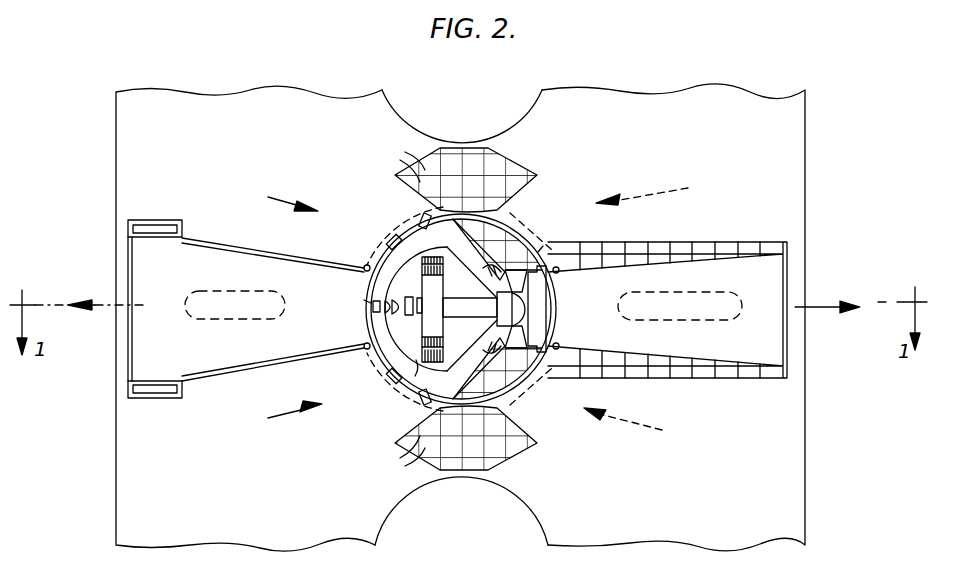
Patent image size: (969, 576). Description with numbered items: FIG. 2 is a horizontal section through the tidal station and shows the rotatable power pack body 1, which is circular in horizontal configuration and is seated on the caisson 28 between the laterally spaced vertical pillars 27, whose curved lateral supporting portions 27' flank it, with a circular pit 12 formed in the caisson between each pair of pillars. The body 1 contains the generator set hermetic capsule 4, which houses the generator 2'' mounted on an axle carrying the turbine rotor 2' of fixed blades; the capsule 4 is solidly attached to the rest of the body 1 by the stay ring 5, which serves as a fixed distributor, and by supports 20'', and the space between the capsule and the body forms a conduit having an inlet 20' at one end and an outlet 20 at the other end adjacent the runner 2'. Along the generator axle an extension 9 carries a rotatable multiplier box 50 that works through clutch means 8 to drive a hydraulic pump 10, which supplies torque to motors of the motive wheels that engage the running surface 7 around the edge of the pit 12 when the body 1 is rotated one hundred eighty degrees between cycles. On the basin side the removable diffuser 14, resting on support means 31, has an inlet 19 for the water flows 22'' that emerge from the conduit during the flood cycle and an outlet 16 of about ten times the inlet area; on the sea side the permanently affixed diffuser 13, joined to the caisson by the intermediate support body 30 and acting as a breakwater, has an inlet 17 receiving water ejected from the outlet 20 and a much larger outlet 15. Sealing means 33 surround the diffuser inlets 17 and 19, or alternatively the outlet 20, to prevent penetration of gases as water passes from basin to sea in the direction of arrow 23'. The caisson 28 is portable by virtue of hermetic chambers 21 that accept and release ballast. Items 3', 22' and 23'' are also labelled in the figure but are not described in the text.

The power pack body 1 is at (538, 220).
The turbine rotor 2' is at (514, 309).
The generator 2'' is at (459, 309).
The housing wall 3' is at (548, 237).
The generator set hermetic capsule 4 is at (415, 362).
The stay ring 5 is at (472, 263).
The running surface 7 is at (407, 205).
The clutch means 8 is at (377, 300).
The axle extension 9 is at (397, 316).
The hydraulic pump 10 is at (369, 303).
The circular pit 12 is at (474, 116).
The permanently affixed diffuser 13 is at (710, 337).
The removable diffuser 14 is at (244, 277).
The diffuser outlet 15 is at (805, 272).
The diffuser outlet 16 is at (130, 270).
The diffuser inlet 17 is at (556, 302).
The diffuser inlet 19 is at (368, 318).
The outlet 20 is at (578, 320).
The inlet 20' is at (402, 304).
The supports 20'' is at (371, 309).
The chambers 21 is at (396, 308).
The flow direction E 22' is at (296, 310).
The water flows 22'' is at (90, 319).
The arrow 23' is at (840, 296).
The flow direction F 23'' is at (642, 310).
The vertical pillars 27 is at (466, 309).
The curved lateral supporting portions 27' is at (541, 301).
The caisson 28 is at (226, 163).
The intermediate support body 30 is at (770, 281).
The support means 31 is at (208, 316).
The sealing means 33 is at (364, 267).
The rotatable multiplier box 50 is at (410, 295).